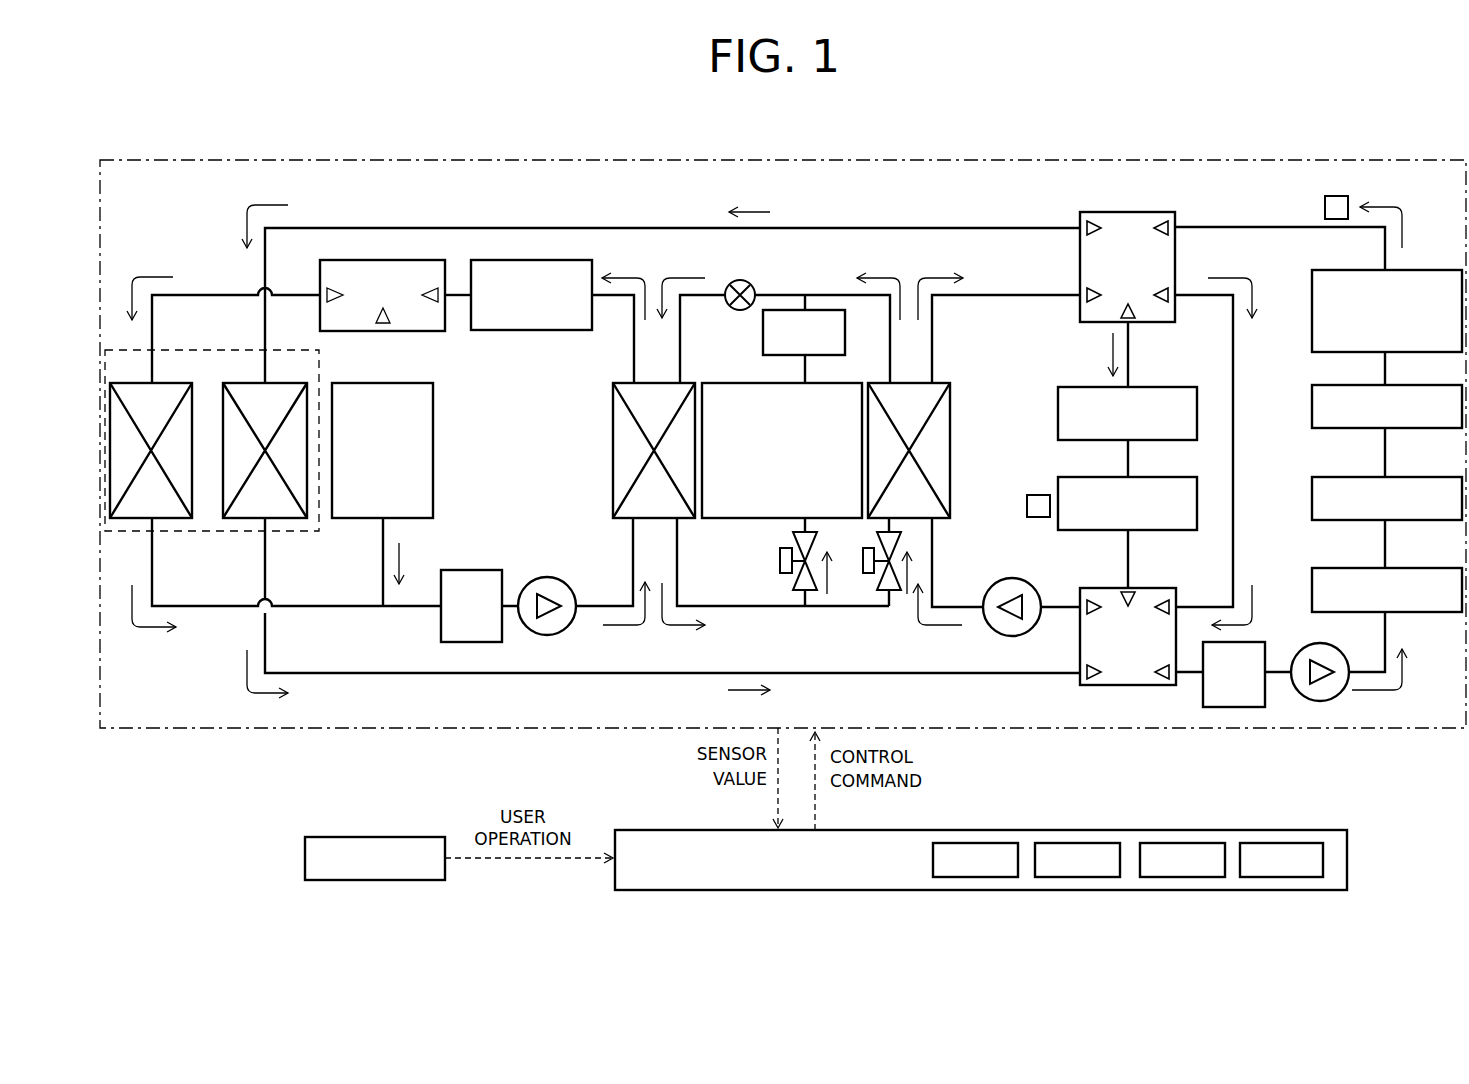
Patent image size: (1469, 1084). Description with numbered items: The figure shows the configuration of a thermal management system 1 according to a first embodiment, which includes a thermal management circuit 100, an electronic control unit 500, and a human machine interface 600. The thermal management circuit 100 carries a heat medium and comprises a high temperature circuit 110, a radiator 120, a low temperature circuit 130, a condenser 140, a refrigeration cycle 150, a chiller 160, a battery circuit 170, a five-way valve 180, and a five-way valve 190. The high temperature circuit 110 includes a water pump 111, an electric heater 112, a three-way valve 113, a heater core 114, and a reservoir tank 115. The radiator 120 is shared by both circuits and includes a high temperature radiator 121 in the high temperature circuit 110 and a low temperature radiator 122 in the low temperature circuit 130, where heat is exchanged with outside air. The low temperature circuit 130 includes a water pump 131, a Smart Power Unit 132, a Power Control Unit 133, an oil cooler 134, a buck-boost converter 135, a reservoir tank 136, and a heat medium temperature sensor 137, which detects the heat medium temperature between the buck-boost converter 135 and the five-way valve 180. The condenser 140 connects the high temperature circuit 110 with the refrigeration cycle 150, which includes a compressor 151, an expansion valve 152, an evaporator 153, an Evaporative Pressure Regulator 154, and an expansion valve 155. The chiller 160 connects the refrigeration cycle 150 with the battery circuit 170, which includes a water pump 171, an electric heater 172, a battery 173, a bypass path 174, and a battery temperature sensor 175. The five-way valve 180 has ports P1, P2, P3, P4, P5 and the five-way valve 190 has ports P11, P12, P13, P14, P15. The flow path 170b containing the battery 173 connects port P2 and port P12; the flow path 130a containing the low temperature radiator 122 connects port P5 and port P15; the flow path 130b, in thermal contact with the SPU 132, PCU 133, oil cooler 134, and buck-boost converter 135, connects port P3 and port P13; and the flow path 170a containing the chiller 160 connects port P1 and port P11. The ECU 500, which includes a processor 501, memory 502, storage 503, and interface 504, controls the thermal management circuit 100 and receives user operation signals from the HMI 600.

The thermal management system 1 is at (128, 146).
The thermal management circuit 100 is at (1312, 160).
The high temperature circuit 110 is at (291, 286).
The water pump 111 is at (565, 583).
The electric heater 112 is at (548, 262).
The three-way valve 113 is at (418, 262).
The heater core 114 is at (415, 386).
The reservoir tank 115 is at (482, 572).
The radiator 120 is at (195, 352).
The high temperature radiator 121 is at (170, 522).
The low temperature radiator 122 is at (282, 522).
The low temperature circuit 130 is at (1272, 218).
The flow path 130a is at (388, 228).
The flow path 130b is at (1240, 228).
The water pump 131 is at (1325, 646).
The Smart Power Unit 132 is at (1395, 570).
The Power Control Unit 133 is at (1395, 478).
The oil cooler 134 is at (1395, 387).
The buck-boost converter 135 is at (1395, 272).
The reservoir tank 136 is at (1250, 642).
The heat medium temperature sensor 137 is at (1338, 197).
The condenser 140 is at (690, 386).
The refrigeration cycle 150 is at (774, 286).
The compressor 151 is at (742, 278).
The expansion valve 152 is at (795, 547).
The evaporator 153 is at (832, 386).
The Evaporative Pressure Regulator 154 is at (828, 310).
The expansion valve 155 is at (878, 548).
The chiller 160 is at (940, 386).
The battery circuit 170 is at (995, 290).
The flow path 170a is at (1005, 300).
The flow path 170b is at (1130, 545).
The water pump 171 is at (993, 582).
The electric heater 172 is at (1155, 387).
The battery 173 is at (1160, 478).
The bypass path 174 is at (1235, 371).
The battery temperature sensor 175 is at (1022, 495).
The five-way valve 180 is at (1145, 212).
The five-way valve 190 is at (1158, 590).
The port P1 is at (1078, 290).
The port P2 is at (1130, 325).
The port P3 is at (1178, 219).
The port P4 is at (1178, 286).
The port P5 is at (1078, 216).
The port P11 is at (1080, 600).
The port P12 is at (1120, 590).
The port P13 is at (1172, 688).
The port P14 is at (1178, 606).
The port P15 is at (1082, 688).
The electronic control unit 500 is at (852, 830).
The processor 501 is at (975, 843).
The memory 502 is at (1079, 843).
The storage 503 is at (1183, 843).
The interface 504 is at (1288, 843).
The human machine interface 600 is at (420, 838).